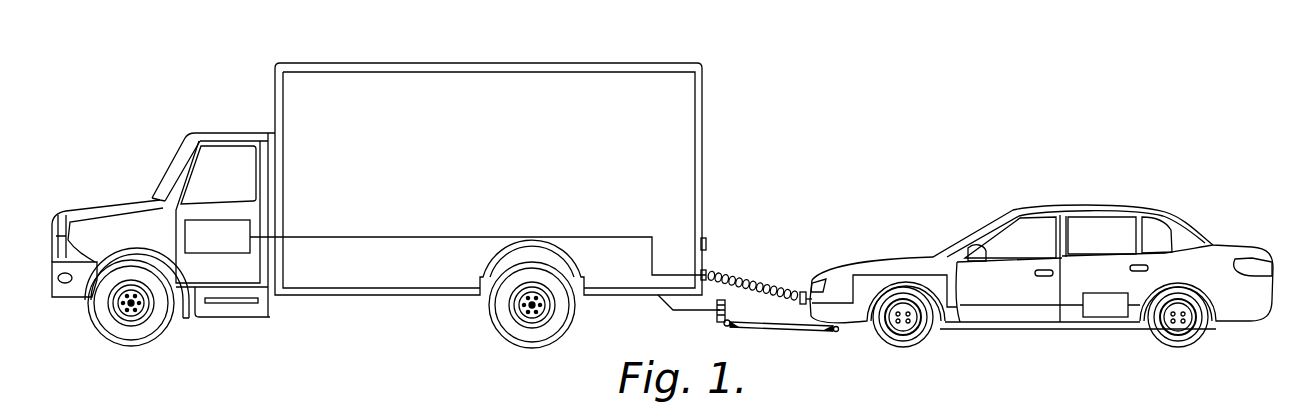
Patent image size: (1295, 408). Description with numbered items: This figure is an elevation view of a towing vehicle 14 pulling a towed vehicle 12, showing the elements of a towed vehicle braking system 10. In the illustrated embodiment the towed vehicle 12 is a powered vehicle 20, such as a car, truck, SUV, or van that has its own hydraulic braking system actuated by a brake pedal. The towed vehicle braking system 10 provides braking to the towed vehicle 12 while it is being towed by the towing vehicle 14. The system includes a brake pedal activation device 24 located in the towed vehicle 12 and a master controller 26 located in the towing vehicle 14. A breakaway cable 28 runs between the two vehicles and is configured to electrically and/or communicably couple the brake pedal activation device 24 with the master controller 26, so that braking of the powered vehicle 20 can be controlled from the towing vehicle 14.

The towed vehicle braking system 10 is at (662, 199).
The towed vehicle 12 is at (1041, 261).
The towing vehicle 14 is at (423, 65).
The powered vehicle 20 is at (1041, 261).
The brake pedal activation device 24 is at (1112, 317).
The master controller 26 is at (247, 228).
The breakaway cable 28 is at (748, 282).